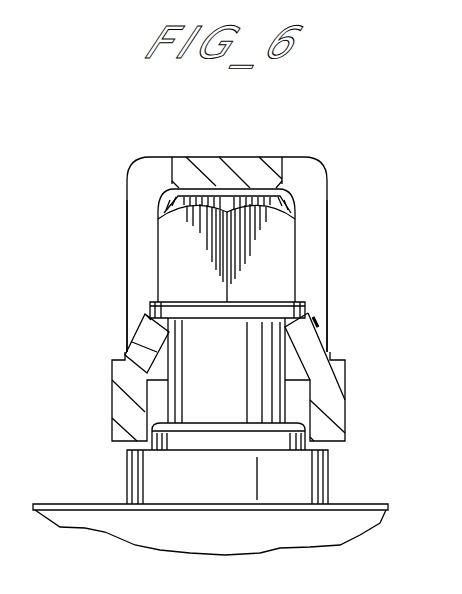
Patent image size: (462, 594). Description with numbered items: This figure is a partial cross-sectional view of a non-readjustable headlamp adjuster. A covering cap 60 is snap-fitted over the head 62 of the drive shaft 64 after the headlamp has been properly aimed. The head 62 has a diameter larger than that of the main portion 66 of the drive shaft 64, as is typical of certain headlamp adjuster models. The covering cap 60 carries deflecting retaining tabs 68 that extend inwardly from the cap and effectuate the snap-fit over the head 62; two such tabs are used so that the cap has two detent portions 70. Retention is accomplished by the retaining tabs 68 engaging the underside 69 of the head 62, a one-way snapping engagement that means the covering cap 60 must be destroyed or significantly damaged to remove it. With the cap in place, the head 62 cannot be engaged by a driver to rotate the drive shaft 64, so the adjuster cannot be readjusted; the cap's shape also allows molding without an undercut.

The covering cap 60 is at (140, 157).
The head 62 is at (273, 228).
The drive shaft 64 is at (254, 189).
The main portion 66 is at (238, 385).
The retaining tabs 68 is at (140, 354).
The underside 69 is at (142, 326).
The detent portions 70 is at (142, 250).